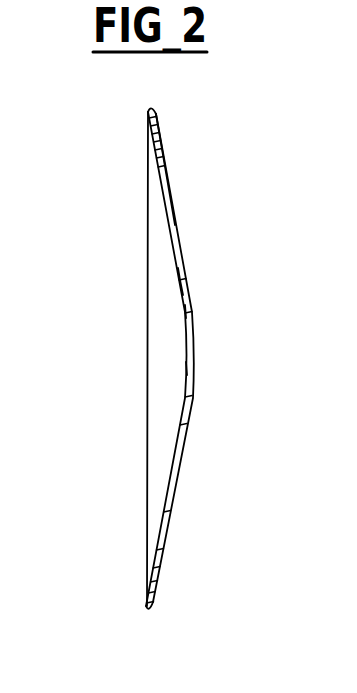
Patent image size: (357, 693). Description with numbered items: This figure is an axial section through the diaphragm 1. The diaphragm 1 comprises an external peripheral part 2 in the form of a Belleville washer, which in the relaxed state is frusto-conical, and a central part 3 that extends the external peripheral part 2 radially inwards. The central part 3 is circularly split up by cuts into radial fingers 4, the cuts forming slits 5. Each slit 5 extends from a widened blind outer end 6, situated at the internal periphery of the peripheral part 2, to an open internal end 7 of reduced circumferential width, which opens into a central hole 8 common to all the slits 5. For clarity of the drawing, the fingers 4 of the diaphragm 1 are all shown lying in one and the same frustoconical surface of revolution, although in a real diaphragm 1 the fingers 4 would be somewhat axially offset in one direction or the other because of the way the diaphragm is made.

The diaphragm 1 is at (149, 345).
The external peripheral part 2 is at (160, 142).
The central part 3 is at (178, 227).
The radial fingers 4 is at (183, 270).
The slits 5 is at (183, 282).
The widened blind outer end 6 is at (160, 177).
The open internal end 7 is at (188, 306).
The central hole 8 is at (188, 368).